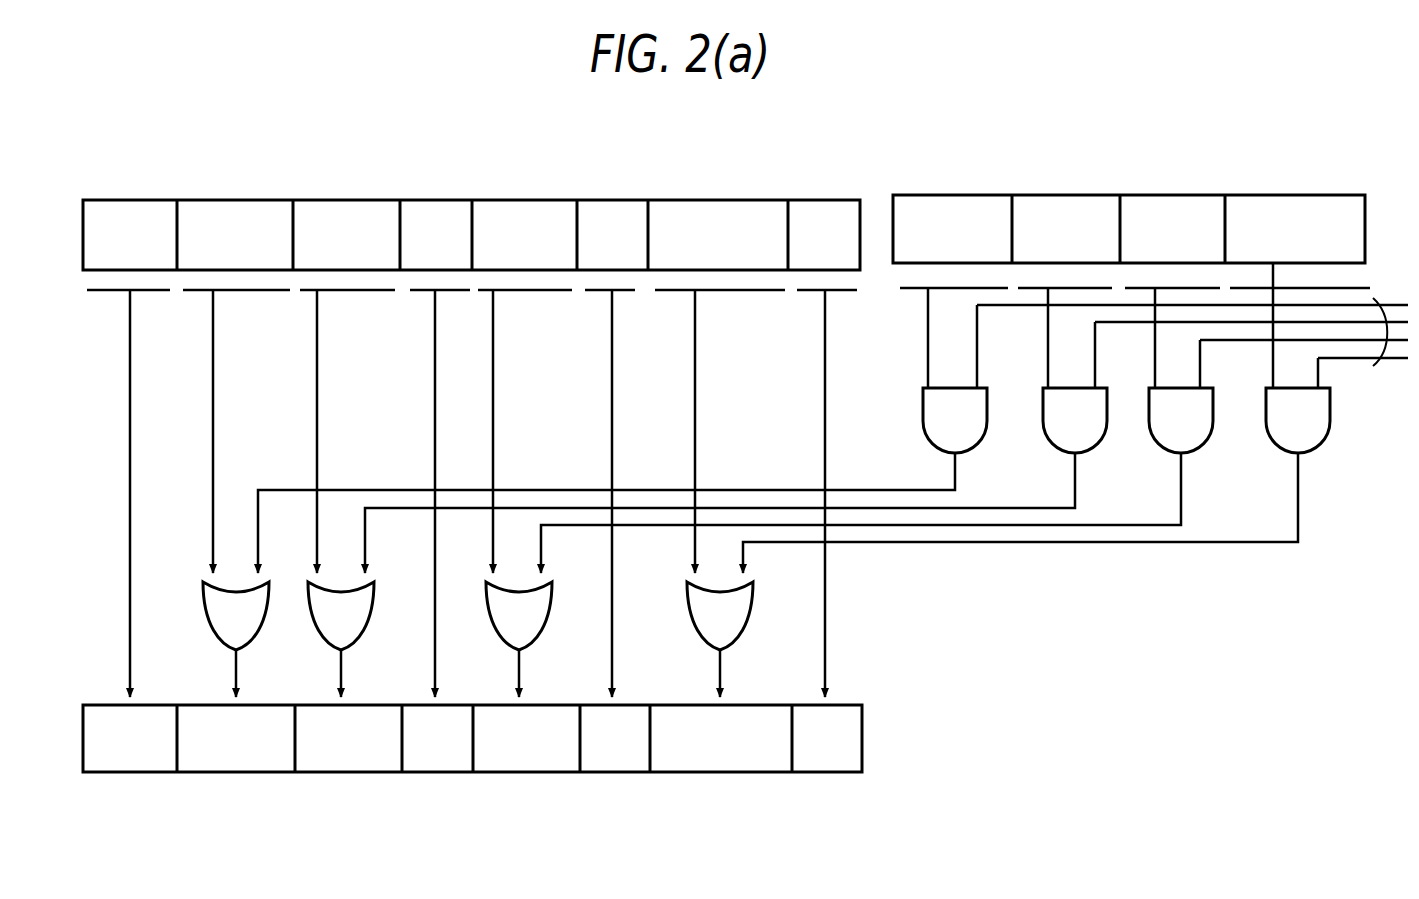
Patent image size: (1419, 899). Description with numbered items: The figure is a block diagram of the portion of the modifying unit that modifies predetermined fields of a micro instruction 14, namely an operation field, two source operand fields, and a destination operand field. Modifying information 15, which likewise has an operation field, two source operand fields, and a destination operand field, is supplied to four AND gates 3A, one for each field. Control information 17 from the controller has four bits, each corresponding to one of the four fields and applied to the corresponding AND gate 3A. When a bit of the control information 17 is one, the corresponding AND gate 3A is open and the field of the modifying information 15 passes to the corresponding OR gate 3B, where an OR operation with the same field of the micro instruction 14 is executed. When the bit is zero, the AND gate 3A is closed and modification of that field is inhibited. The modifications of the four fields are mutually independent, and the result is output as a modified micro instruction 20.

The micro instruction 14 is at (435, 199).
The modifying information 15 is at (1057, 194).
The control information 17 is at (1380, 300).
The AND gate 3A is at (934, 424).
The OR gate 3B is at (218, 622).
The modified micro instruction 20 is at (596, 775).